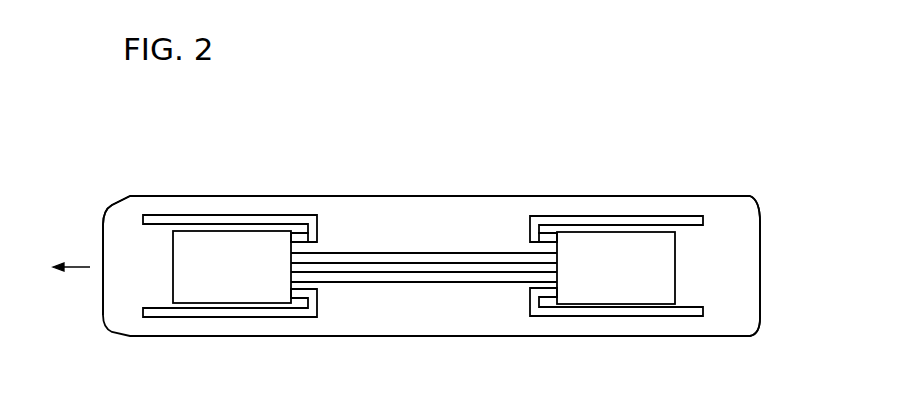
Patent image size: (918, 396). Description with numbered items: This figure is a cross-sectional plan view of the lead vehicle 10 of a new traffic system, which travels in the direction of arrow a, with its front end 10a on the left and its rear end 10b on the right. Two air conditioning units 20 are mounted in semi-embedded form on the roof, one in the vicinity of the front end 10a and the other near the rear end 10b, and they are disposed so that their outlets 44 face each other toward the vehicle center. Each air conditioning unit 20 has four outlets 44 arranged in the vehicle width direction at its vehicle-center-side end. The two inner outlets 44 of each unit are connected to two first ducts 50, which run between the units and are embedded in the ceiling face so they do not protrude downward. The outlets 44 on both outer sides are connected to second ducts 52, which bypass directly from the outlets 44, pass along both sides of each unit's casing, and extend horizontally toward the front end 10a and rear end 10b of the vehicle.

The lead vehicle 10 is at (418, 193).
The front end 10a is at (108, 212).
The rear end 10b is at (762, 263).
The air conditioning unit 20 is at (173, 268).
The outlet 44 is at (304, 239).
The first duct 50 is at (385, 252).
The second duct 52 is at (230, 214).
The arrow a is at (72, 266).